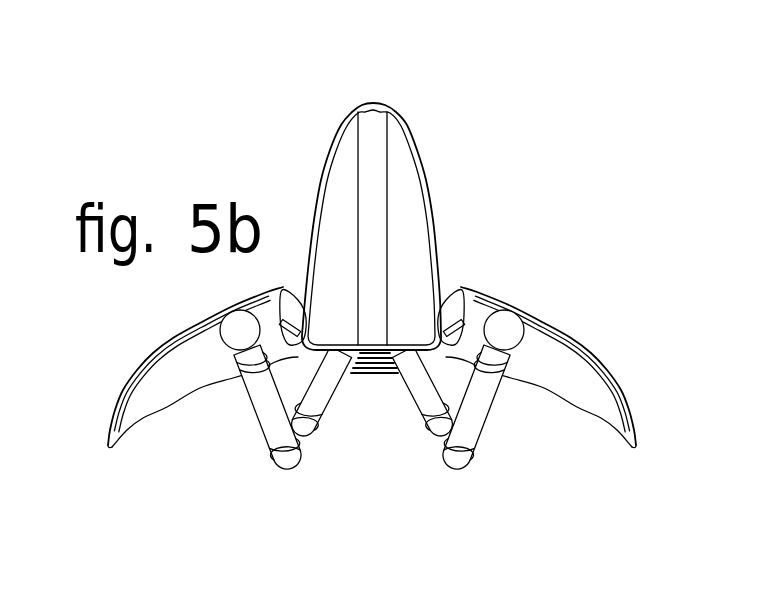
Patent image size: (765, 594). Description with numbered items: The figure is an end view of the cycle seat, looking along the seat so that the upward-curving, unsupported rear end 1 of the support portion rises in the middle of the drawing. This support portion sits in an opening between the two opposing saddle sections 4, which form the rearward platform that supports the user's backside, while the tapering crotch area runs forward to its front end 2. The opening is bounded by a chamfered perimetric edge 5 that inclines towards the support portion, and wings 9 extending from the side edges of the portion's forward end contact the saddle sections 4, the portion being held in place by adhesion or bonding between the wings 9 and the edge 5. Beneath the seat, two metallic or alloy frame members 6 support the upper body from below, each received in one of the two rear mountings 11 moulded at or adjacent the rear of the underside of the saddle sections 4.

The rear end 1 is at (371, 201).
The front end 2 is at (374, 386).
The saddle sections 4 is at (372, 367).
The chamfered perimetric edge 5 is at (388, 455).
The frame members 6 is at (372, 418).
The wings 9 is at (372, 410).
The rear mountings 11 is at (527, 328).